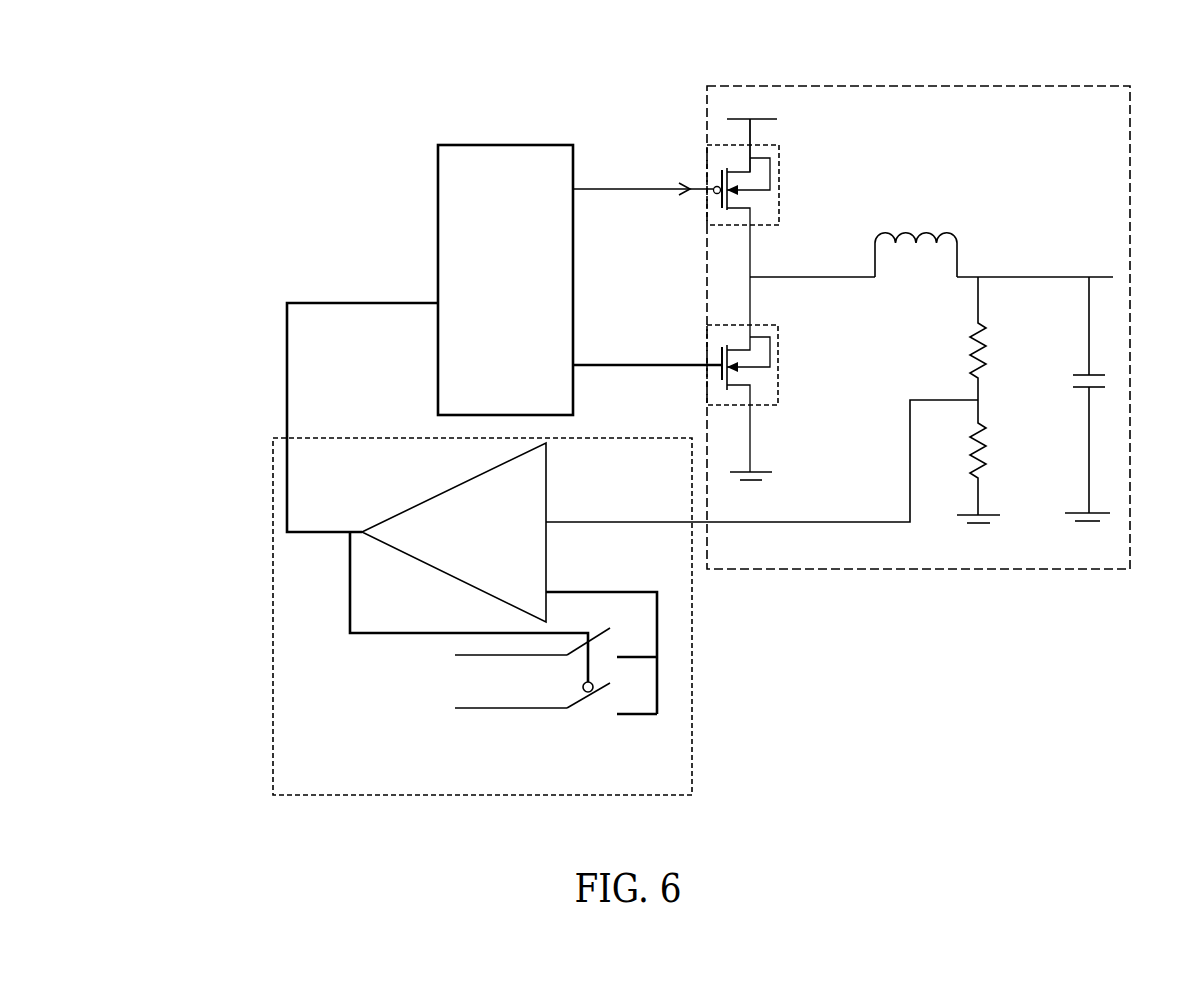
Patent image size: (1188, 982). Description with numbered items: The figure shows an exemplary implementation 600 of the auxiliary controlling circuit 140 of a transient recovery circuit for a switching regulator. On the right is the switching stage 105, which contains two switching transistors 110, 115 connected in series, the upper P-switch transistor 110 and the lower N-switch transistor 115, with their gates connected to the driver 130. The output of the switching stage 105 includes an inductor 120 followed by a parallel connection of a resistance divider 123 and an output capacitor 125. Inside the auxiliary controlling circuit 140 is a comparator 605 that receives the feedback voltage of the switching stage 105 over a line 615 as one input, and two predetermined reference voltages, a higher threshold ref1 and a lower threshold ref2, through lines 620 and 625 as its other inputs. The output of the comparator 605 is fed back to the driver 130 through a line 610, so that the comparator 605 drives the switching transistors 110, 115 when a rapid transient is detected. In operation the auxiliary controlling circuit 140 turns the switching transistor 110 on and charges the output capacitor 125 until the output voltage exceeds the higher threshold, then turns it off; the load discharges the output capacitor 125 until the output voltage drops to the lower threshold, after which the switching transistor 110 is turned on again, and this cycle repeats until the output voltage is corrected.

The switching regulator circuit 600 is at (258, 125).
The switching stage 105 is at (995, 86).
The switching transistor 110 is at (778, 187).
The switching transistor 115 is at (778, 367).
The inductor 120 is at (950, 243).
The resistance divider 123 is at (980, 388).
The output capacitor 125 is at (1080, 387).
The driver 130 is at (438, 196).
The auxiliary controlling circuit 140 is at (692, 662).
The comparator 605 is at (452, 578).
The line 610 is at (287, 425).
The line 615 is at (675, 522).
The line 620 is at (530, 655).
The line 625 is at (515, 708).